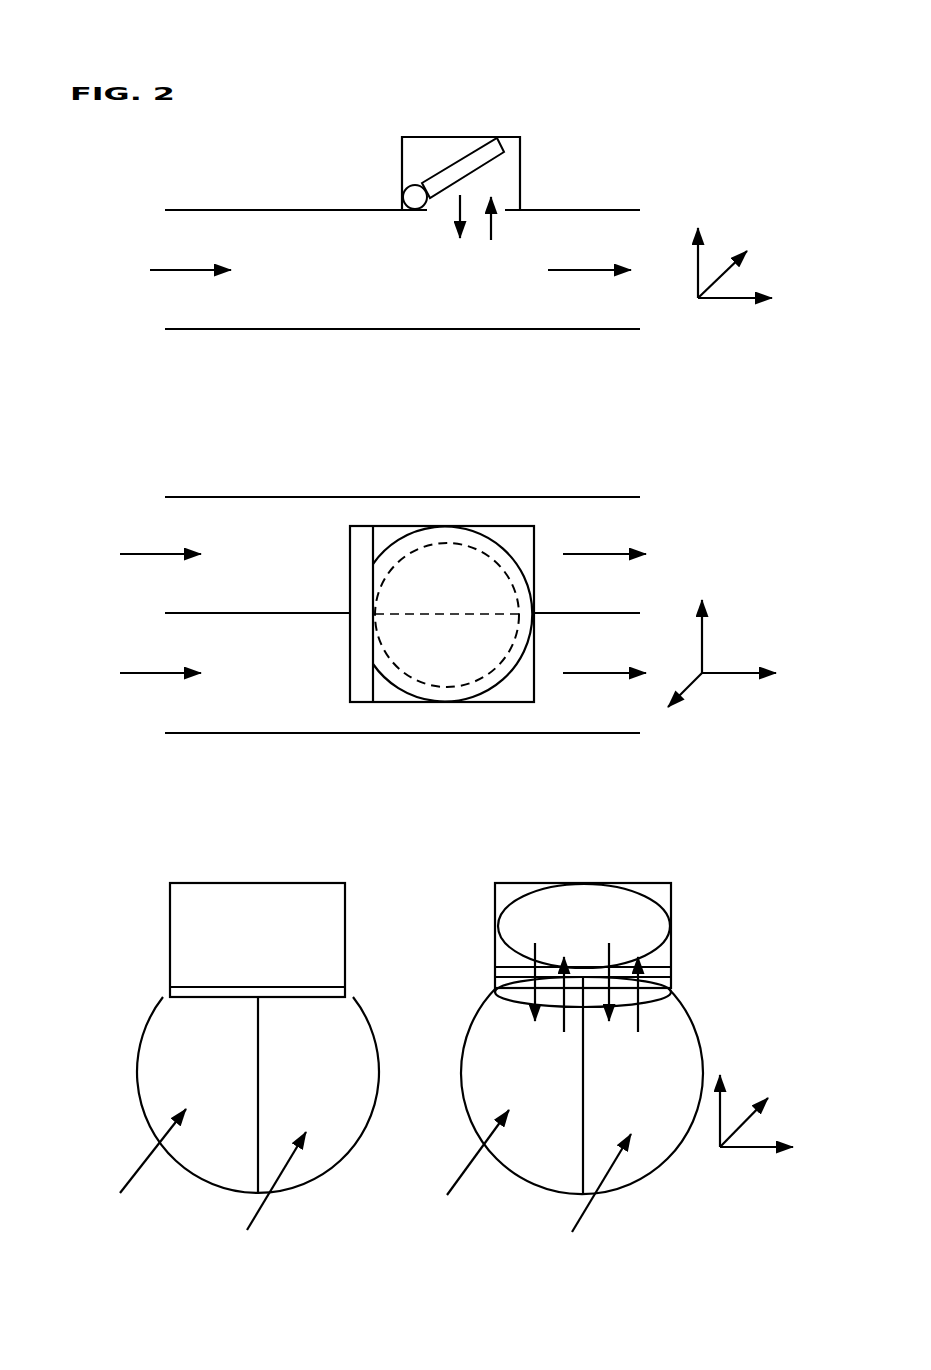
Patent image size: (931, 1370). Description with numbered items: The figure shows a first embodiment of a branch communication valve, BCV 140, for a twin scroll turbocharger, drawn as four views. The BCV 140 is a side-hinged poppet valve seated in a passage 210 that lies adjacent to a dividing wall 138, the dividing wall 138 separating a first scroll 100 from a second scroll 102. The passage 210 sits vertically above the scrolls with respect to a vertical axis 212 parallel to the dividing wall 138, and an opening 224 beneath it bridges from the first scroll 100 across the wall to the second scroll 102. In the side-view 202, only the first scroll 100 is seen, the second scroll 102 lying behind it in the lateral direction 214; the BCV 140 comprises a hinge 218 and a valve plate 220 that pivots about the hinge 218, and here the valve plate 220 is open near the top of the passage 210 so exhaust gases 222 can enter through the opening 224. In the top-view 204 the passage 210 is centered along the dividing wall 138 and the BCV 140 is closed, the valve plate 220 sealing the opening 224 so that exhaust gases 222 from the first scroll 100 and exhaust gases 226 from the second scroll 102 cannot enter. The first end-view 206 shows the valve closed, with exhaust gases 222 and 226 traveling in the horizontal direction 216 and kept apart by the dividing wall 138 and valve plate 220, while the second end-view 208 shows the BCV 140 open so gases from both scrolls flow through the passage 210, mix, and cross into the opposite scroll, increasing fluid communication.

The first scroll 100 is at (195, 210).
The second scroll 102 is at (210, 733).
The dividing wall 138 is at (583, 612).
The branch communication valve 140 is at (414, 557).
The side-view 202 is at (624, 102).
The top-view 204 is at (624, 445).
The first end-view 206 is at (328, 847).
The second end-view 208 is at (668, 848).
The passage 210 is at (432, 137).
The vertical axis 212 is at (700, 241).
The lateral direction 214 is at (735, 266).
The horizontal direction 216 is at (740, 302).
The hinge 218 is at (402, 193).
The valve plate 220 is at (460, 158).
The exhaust gases 222 is at (195, 270).
The opening 224 is at (447, 212).
The exhaust gases 226 is at (135, 673).